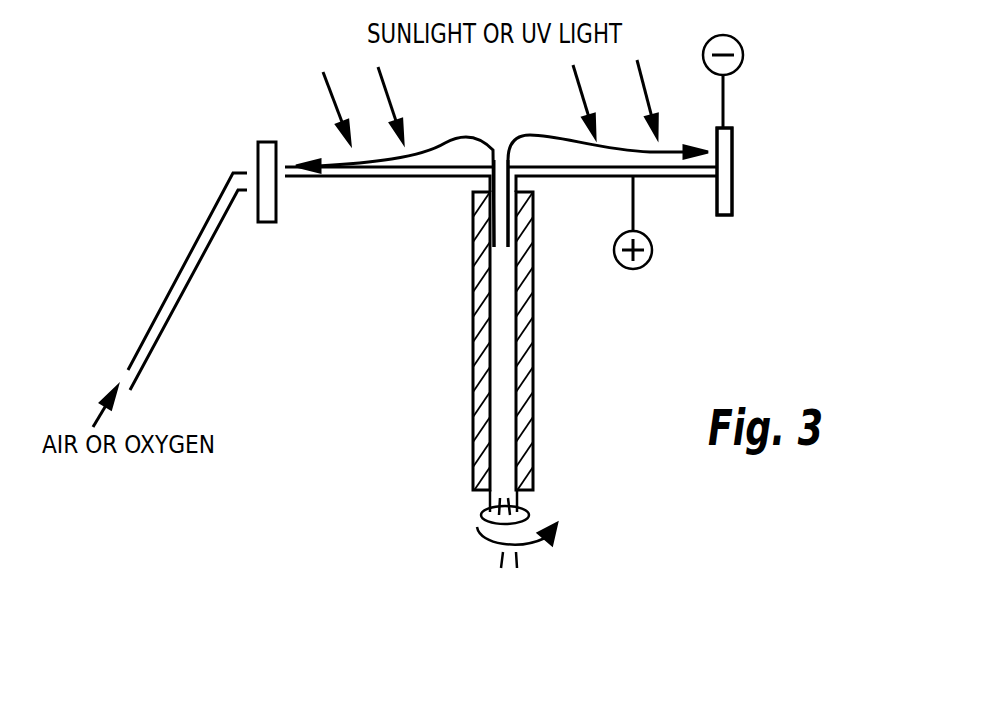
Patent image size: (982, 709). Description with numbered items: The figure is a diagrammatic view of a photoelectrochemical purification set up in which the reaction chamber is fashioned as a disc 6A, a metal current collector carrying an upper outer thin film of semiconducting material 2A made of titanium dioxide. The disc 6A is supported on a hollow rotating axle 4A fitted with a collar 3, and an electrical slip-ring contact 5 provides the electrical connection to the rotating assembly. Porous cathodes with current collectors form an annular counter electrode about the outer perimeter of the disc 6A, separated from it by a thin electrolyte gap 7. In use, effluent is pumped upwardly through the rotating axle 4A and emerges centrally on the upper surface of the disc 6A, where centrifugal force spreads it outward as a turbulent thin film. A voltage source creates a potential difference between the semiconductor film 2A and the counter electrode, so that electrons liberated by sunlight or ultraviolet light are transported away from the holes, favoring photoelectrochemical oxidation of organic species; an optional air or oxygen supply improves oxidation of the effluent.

The thin film of semiconducting material 2A is at (427, 165).
The collar 3 is at (535, 323).
The hollow rotating axle 4A is at (535, 425).
The electrical slip-ring contact 5 is at (483, 512).
The disc 6A is at (397, 177).
The thin electrolyte gap 7 is at (717, 178).